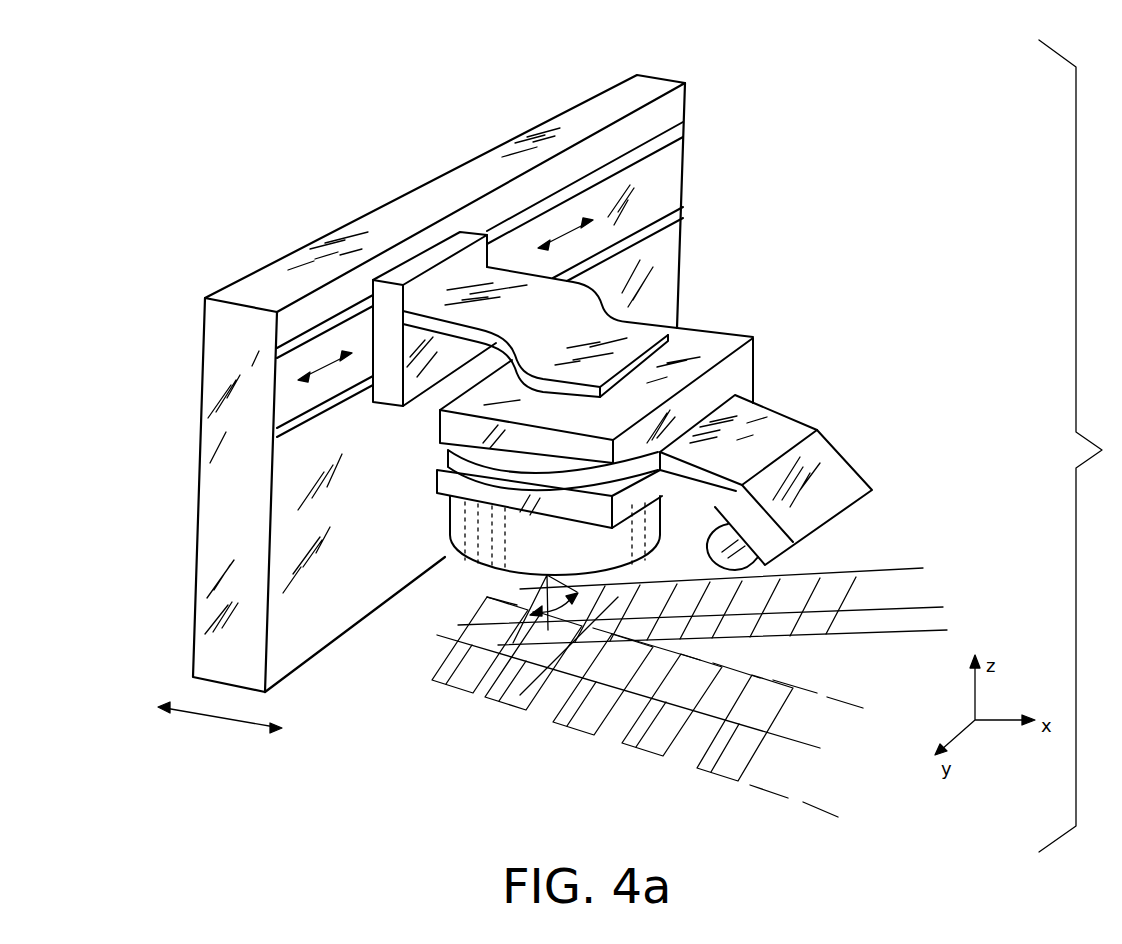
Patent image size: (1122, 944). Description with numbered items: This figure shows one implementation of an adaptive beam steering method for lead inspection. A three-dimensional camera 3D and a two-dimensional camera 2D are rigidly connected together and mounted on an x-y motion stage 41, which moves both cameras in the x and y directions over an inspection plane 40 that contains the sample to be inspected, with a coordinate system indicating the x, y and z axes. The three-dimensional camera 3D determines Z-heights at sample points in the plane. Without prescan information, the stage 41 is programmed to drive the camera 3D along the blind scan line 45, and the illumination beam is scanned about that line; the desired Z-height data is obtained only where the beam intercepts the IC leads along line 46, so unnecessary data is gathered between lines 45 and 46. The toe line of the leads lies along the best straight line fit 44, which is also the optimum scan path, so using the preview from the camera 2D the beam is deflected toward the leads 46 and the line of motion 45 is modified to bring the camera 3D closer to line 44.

The 3-D camera 3D is at (722, 332).
The 2-D camera 2D is at (847, 458).
The inspection plane 40 is at (488, 743).
The x-y motion stage 41 is at (360, 630).
The best straight line fit 44 is at (795, 742).
The blind scan line 45 is at (928, 607).
The line of lead positions 46 is at (585, 722).